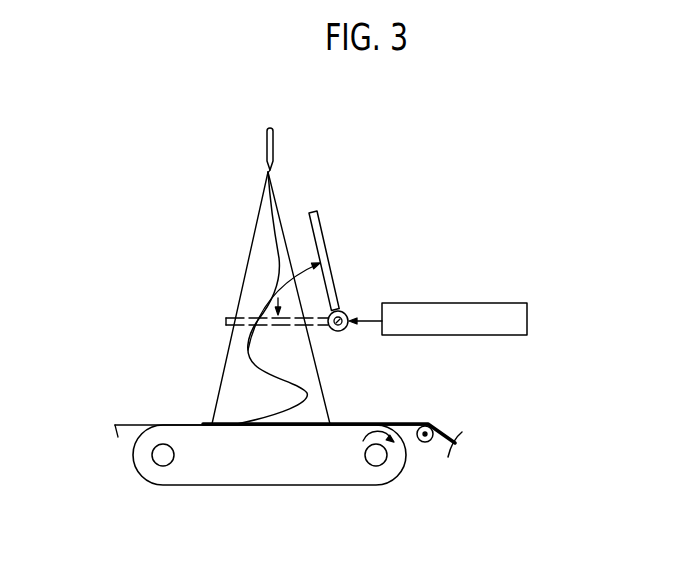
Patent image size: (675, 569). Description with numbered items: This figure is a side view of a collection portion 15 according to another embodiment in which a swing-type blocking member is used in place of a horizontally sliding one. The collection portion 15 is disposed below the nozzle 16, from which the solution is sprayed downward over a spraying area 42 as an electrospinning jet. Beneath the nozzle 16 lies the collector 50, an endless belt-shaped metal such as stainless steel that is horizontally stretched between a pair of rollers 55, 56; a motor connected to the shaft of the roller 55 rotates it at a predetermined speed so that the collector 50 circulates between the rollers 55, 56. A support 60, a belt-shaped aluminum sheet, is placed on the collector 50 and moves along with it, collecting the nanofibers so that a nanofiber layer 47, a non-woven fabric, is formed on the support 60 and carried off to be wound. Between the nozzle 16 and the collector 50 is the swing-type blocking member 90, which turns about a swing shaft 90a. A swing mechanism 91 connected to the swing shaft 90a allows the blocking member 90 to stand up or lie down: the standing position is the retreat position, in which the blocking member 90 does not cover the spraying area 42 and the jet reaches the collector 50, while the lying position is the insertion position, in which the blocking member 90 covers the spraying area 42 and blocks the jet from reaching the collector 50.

The collection portion 15 is at (214, 222).
The nozzle 16 is at (277, 142).
The spraying area 42 is at (238, 302).
The nanofiber layer 47 is at (412, 422).
The collector 50 is at (322, 428).
The roller 55 is at (352, 458).
The roller 56 is at (190, 458).
The support 60 is at (133, 425).
The blocking member 90 is at (323, 243).
The swing shaft 90a is at (340, 311).
The swing mechanism 91 is at (412, 303).